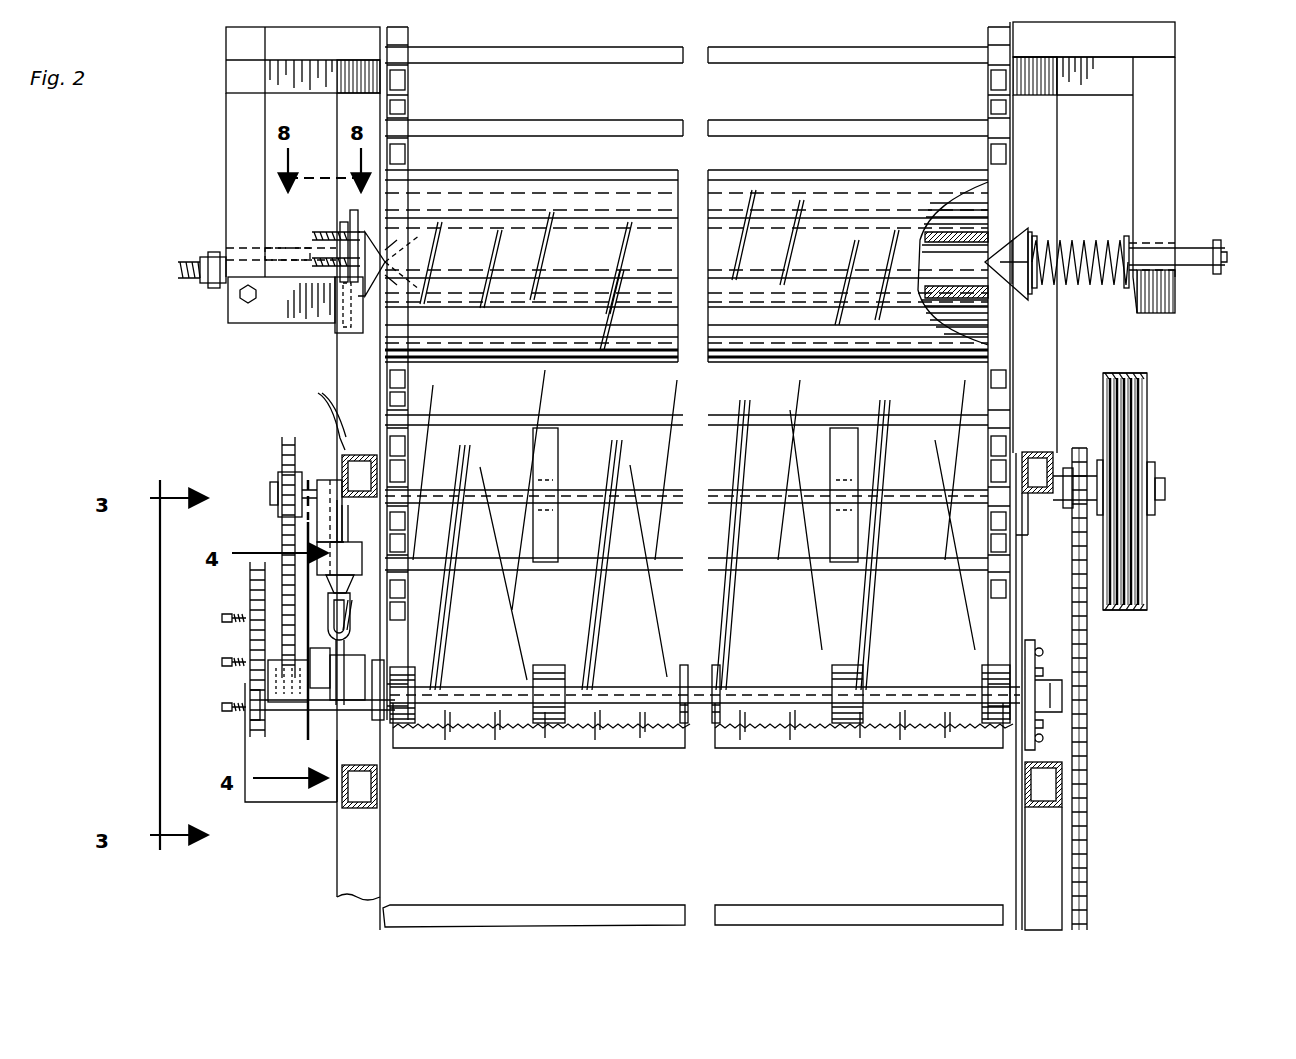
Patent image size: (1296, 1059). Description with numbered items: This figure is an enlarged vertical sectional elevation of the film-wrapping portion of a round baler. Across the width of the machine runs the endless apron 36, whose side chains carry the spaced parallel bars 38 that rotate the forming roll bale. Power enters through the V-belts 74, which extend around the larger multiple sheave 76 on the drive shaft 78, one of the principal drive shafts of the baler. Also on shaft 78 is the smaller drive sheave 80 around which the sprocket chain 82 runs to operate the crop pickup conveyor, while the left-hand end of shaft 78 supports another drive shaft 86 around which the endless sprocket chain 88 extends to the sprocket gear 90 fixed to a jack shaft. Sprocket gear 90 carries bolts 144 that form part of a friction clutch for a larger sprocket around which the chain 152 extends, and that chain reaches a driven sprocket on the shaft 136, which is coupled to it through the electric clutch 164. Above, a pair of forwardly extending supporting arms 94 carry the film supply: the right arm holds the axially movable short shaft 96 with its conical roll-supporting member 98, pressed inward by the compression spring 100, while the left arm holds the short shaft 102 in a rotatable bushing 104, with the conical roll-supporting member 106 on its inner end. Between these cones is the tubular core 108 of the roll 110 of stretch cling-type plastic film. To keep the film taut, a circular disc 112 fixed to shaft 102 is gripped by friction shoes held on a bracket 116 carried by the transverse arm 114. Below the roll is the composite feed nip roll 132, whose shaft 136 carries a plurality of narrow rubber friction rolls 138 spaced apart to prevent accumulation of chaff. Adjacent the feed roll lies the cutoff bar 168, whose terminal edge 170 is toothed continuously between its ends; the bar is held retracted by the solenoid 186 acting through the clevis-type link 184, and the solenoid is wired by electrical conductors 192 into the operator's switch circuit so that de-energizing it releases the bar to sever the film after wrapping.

The endless apron 36 is at (408, 104).
The spaced parallel bars 38 is at (815, 119).
The V-belts 74 is at (1123, 611).
The multiple sheave 76 is at (1121, 558).
The drive shaft 78 is at (1170, 496).
The drive sheave 80 is at (1070, 525).
The sprocket chain 82 is at (1089, 779).
The drive shaft 86 is at (280, 462).
The endless sprocket chain 88 is at (298, 524).
The sprocket gear 90 is at (292, 705).
The supporting arms 94 is at (226, 156).
The short shaft 96 is at (1212, 252).
The conical roll-supporting member 98 is at (1009, 253).
The compression spring 100 is at (1068, 290).
The short shaft 102 is at (178, 267).
The bushing 104 is at (222, 241).
The conical roll-supporting member 106 is at (404, 231).
The tubular core 108 is at (1020, 322).
The roll of plastic film 110 is at (869, 172).
The circular disc 112 is at (325, 211).
The transverse arm 114 is at (290, 323).
The bracket 116 is at (344, 338).
The composite feed nip roll 132 is at (650, 736).
The shaft 136 is at (450, 686).
The friction rolls 138 is at (406, 724).
The bolts 144 is at (218, 620).
The chain 152 is at (250, 594).
The electric clutch 164 is at (314, 732).
The cutoff bar 168 is at (797, 718).
The toothed terminal edge 170 is at (774, 732).
The link 184 is at (349, 619).
The solenoid 186 is at (317, 526).
The electrical conductors 192 is at (316, 396).